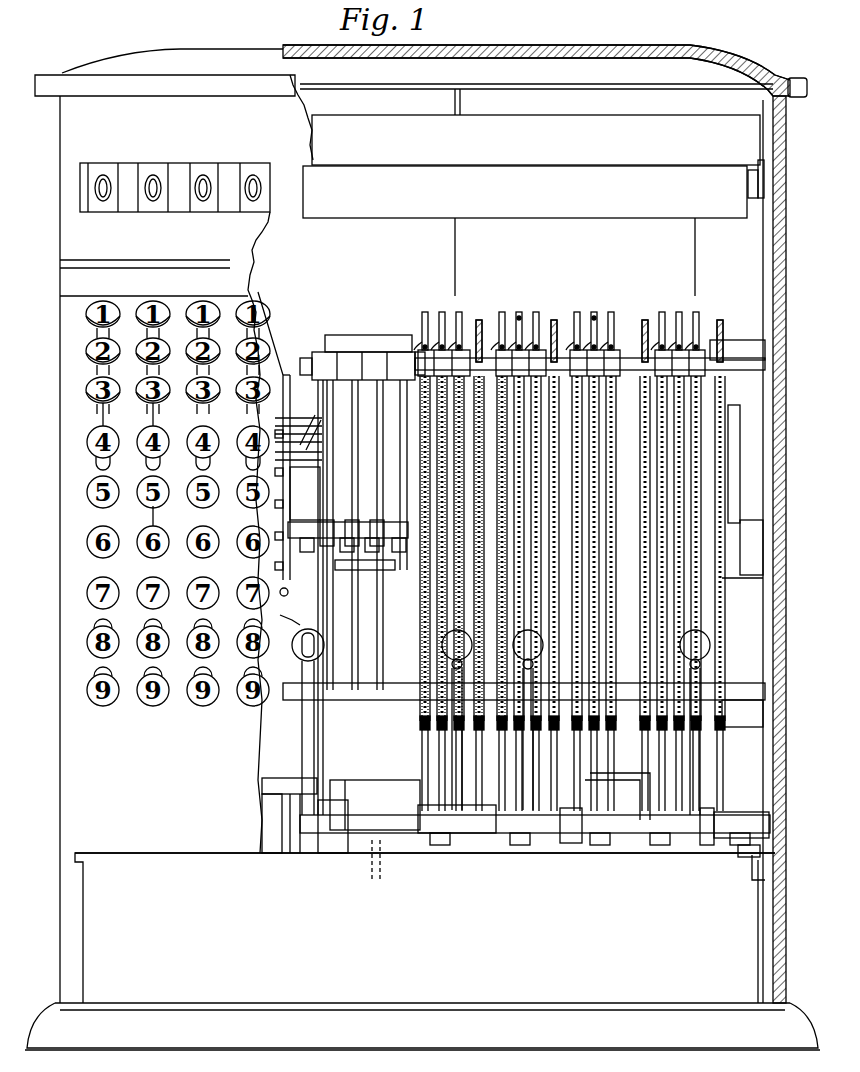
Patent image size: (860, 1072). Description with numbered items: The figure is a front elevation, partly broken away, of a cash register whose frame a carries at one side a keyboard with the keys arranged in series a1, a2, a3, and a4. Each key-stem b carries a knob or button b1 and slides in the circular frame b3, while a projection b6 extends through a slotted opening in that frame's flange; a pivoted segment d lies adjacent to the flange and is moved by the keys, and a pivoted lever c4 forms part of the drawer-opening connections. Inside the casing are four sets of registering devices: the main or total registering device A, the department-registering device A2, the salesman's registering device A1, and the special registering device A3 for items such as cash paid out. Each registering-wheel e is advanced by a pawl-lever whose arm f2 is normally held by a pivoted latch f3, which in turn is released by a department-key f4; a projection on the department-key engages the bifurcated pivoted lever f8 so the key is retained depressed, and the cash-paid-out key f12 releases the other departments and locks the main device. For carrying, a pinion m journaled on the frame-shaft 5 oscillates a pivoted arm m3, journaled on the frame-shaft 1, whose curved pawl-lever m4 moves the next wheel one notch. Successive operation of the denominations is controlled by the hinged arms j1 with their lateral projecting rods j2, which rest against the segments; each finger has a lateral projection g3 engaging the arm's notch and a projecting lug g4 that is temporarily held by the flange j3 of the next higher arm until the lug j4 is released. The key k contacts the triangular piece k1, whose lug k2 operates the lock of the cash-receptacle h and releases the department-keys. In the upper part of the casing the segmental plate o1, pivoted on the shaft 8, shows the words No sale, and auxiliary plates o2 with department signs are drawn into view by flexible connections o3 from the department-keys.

The frame a is at (422, 547).
The key series a1 is at (253, 518).
The key series a2 is at (203, 518).
The key series a3 is at (153, 518).
The key series a4 is at (103, 518).
The key-stem b is at (148, 413).
The knob or button b1 is at (148, 512).
The circular frame b3 is at (250, 514).
The projection b6 is at (318, 480).
The hinged arm j1 is at (338, 490).
The lateral projecting rod j2 is at (306, 408).
The flange j3 is at (355, 512).
The lug j4 is at (379, 512).
The lateral projection g3 is at (322, 542).
The projecting lug g4 is at (368, 572).
The pivoted segment d is at (284, 601).
The link c4 is at (290, 627).
The key k is at (300, 722).
The triangular piece k1 is at (307, 845).
The lug k2 is at (282, 778).
The cash-receptacle h is at (425, 903).
The frame-shaft 5 is at (372, 330).
The pinion m is at (600, 327).
The pivoted arm m3 is at (420, 362).
The curved pawl-lever m4 is at (522, 322).
The registering-wheel e is at (572, 593).
The frame-shaft 1 is at (745, 360).
The shaft 8 is at (750, 188).
The segmental plate o1 is at (228, 187).
The auxiliary plate o2 is at (693, 237).
The flexible connection o3 is at (457, 237).
The main or total registering device A is at (593, 318).
The salesman's registering device A1 is at (518, 317).
The department-registering device A2 is at (442, 317).
The special registering device A3 is at (708, 315).
The arm f2 is at (560, 753).
The pivoted latch f3 is at (522, 764).
The department-key f4 is at (452, 760).
The pivoted lever f8 is at (706, 782).
The cash-paid-out key f12 is at (700, 754).